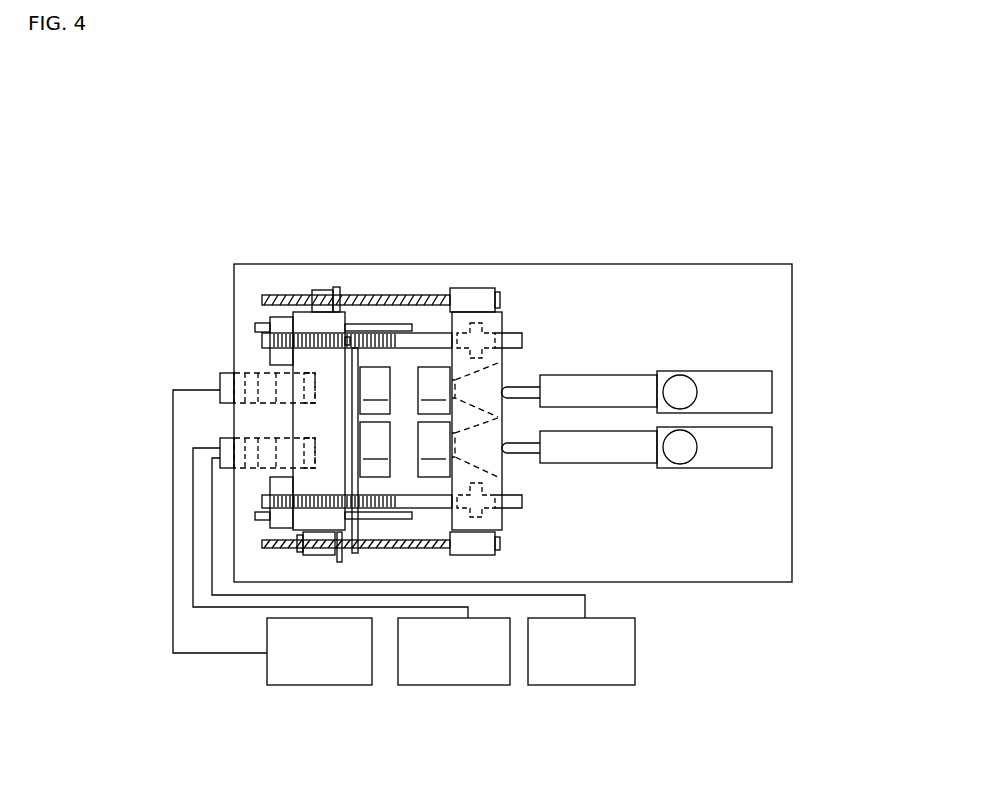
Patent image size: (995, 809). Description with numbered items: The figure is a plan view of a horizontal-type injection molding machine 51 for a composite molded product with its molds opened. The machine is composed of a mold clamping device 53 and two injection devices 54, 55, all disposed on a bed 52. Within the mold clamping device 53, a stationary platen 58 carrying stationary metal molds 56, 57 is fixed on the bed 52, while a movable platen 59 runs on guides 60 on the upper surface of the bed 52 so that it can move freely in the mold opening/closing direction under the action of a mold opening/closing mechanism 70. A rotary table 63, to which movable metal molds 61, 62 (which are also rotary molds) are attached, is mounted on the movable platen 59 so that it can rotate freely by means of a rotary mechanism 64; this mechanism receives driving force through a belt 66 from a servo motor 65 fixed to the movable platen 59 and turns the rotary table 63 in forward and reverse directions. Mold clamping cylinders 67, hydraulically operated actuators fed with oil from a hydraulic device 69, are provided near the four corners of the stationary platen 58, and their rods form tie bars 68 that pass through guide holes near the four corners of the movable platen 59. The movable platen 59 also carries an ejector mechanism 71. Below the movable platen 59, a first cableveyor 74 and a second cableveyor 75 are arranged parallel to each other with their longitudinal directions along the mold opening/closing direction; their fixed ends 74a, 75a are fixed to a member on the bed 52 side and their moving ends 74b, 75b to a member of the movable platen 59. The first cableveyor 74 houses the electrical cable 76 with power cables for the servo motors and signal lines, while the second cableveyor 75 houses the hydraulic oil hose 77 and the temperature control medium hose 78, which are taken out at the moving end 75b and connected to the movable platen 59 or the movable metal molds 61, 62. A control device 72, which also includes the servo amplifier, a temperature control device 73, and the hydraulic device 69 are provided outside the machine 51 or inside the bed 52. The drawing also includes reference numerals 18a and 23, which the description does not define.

The injection molding machine for a composite molded product 51 is at (538, 166).
The bed 52 is at (772, 300).
The mold clamping device 53 is at (351, 435).
The screw shaft 18a is at (358, 305).
The movable platen 59 is at (298, 297).
The servo motor 65 is at (320, 545).
The rotary mechanism 64 is at (357, 593).
The mold opening/closing mechanism 70 is at (501, 468).
The stationary platen 58 is at (470, 312).
The ejector mechanism 71 is at (285, 421).
The support block 23 is at (270, 320).
The guides 60 is at (257, 327).
The tie bars 68 is at (414, 330).
The belt 66 is at (357, 517).
The rotary table 63 is at (357, 360).
The mold clamping cylinders 67 is at (487, 333).
The movable metal mold 61 is at (375, 390).
The stationary metal mold 56 is at (434, 390).
The movable metal mold 62 is at (375, 449).
The stationary metal mold 57 is at (434, 449).
The injection device 54 is at (710, 380).
The injection device 55 is at (727, 458).
The first cableveyor 74 is at (196, 358).
The fixed end 74a is at (247, 382).
The moving end 74b is at (295, 390).
The second cableveyor 75 is at (196, 506).
The fixed end 75a is at (250, 452).
The moving end 75b is at (307, 452).
The electrical cable 76 is at (228, 655).
The hydraulic oil hose 77 is at (228, 608).
The temperature control medium hose 78 is at (207, 583).
The control device 72 is at (278, 673).
The temperature control device 73 is at (482, 673).
The hydraulic device 69 is at (607, 663).